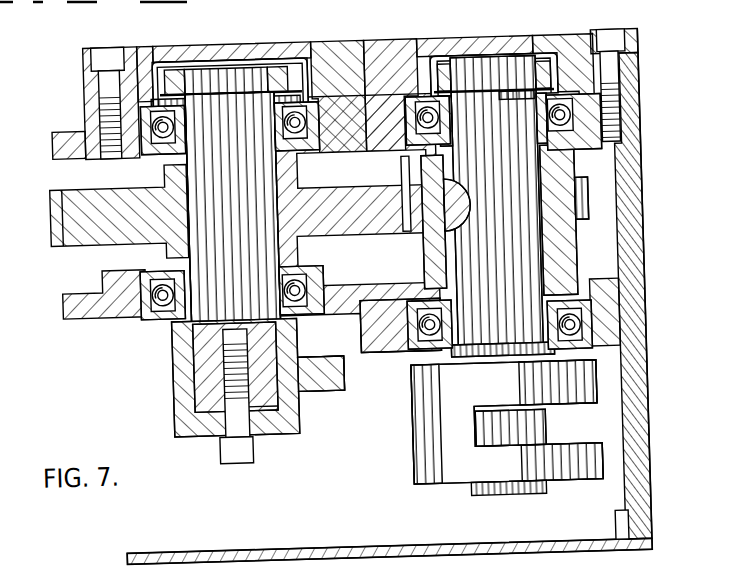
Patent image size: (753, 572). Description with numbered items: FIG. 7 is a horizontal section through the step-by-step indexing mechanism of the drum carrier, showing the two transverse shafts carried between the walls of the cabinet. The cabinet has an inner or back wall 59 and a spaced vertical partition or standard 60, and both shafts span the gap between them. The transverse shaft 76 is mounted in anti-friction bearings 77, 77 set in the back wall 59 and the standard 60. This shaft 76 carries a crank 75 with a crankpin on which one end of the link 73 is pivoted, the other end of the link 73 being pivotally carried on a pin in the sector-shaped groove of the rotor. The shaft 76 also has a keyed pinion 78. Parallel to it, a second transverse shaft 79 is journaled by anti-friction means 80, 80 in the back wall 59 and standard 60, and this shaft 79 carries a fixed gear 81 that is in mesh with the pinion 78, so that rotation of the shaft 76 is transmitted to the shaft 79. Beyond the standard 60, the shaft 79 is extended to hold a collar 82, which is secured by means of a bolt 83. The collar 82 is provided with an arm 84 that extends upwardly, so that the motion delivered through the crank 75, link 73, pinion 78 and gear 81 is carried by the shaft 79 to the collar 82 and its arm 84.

The inner wall 59 is at (633, 134).
The standard 60 is at (396, 340).
The link 73 is at (533, 432).
The crank 75 is at (414, 441).
The transverse shaft 76 is at (493, 118).
The anti-friction bearings 77 is at (578, 148).
The pinion 78 is at (592, 216).
The second transverse shaft 79 is at (264, 92).
The anti-friction means 80 is at (168, 134).
The gear 81 is at (328, 199).
The collar 82 is at (176, 364).
The bolt 83 is at (244, 444).
The arm 84 is at (325, 378).